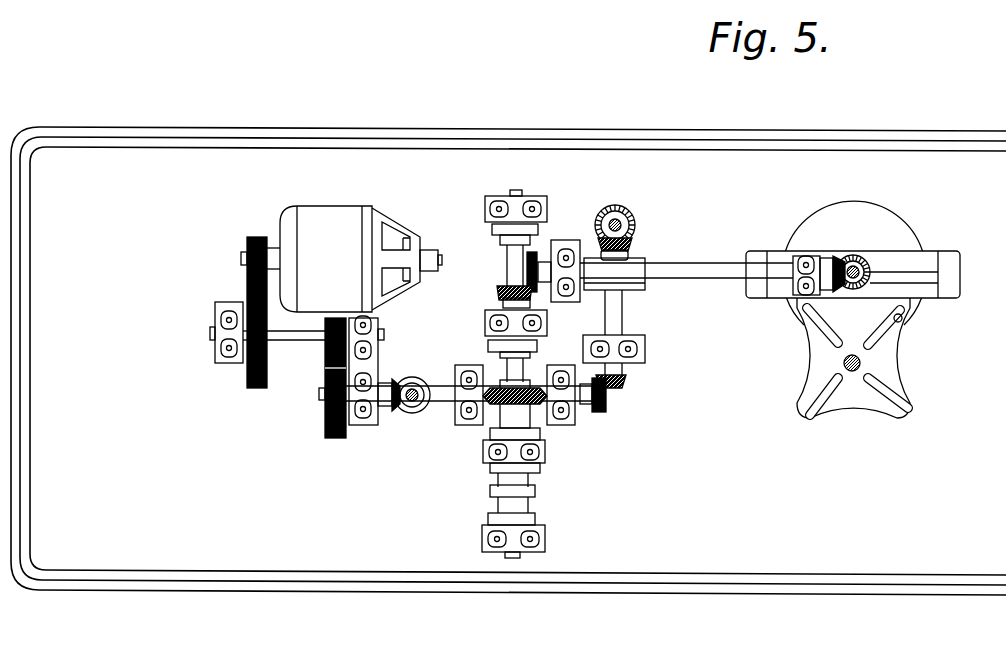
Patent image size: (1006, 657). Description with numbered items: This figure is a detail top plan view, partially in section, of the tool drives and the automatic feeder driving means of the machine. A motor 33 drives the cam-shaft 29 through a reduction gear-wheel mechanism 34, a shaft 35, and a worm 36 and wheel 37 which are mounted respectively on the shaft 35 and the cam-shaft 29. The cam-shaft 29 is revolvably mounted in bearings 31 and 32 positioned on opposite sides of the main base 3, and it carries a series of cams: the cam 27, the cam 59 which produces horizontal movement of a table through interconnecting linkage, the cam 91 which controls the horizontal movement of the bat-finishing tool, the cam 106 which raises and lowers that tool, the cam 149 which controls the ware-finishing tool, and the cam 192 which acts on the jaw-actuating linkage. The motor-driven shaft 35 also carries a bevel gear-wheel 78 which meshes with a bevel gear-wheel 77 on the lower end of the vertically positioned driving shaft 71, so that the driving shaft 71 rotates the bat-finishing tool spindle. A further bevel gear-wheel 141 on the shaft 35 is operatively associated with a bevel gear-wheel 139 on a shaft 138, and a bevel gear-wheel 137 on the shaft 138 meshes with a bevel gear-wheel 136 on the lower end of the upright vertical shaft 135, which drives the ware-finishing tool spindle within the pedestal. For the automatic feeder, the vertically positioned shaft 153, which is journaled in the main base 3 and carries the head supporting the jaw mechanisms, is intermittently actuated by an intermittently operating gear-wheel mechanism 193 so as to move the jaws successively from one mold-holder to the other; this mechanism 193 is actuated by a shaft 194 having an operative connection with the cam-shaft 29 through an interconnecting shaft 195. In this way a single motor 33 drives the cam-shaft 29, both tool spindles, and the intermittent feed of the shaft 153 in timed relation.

The main base 3 is at (418, 158).
The cam 27 is at (536, 520).
The cam-shaft 29 is at (505, 557).
The bearing 31 is at (545, 452).
The bearing 32 is at (541, 211).
The motor 33 is at (324, 210).
The reduction gear-wheel mechanism 34 is at (293, 337).
The shaft 35 is at (438, 390).
The worm 36 is at (515, 404).
The wheel 37 is at (521, 394).
The cam 59 is at (535, 492).
The driving shaft 71 is at (412, 385).
The bevel gear-wheel 77 is at (412, 413).
The bevel gear-wheel 78 is at (396, 415).
The cam 91 is at (540, 470).
The cam 106 is at (541, 434).
The vertical shaft 135 is at (635, 224).
The bevel gear-wheel 136 is at (623, 213).
The bevel gear-wheel 137 is at (629, 247).
The shaft 138 is at (614, 312).
The bevel gear-wheel 139 is at (626, 383).
The bevel gear-wheel 141 is at (600, 412).
The cam 149 is at (499, 229).
The vertically positioned shaft 153 is at (860, 363).
The cam 192 is at (490, 347).
The intermittently operating gear-wheel mechanism 193 is at (838, 258).
The shaft 194 is at (872, 270).
The interconnecting shaft 195 is at (703, 277).